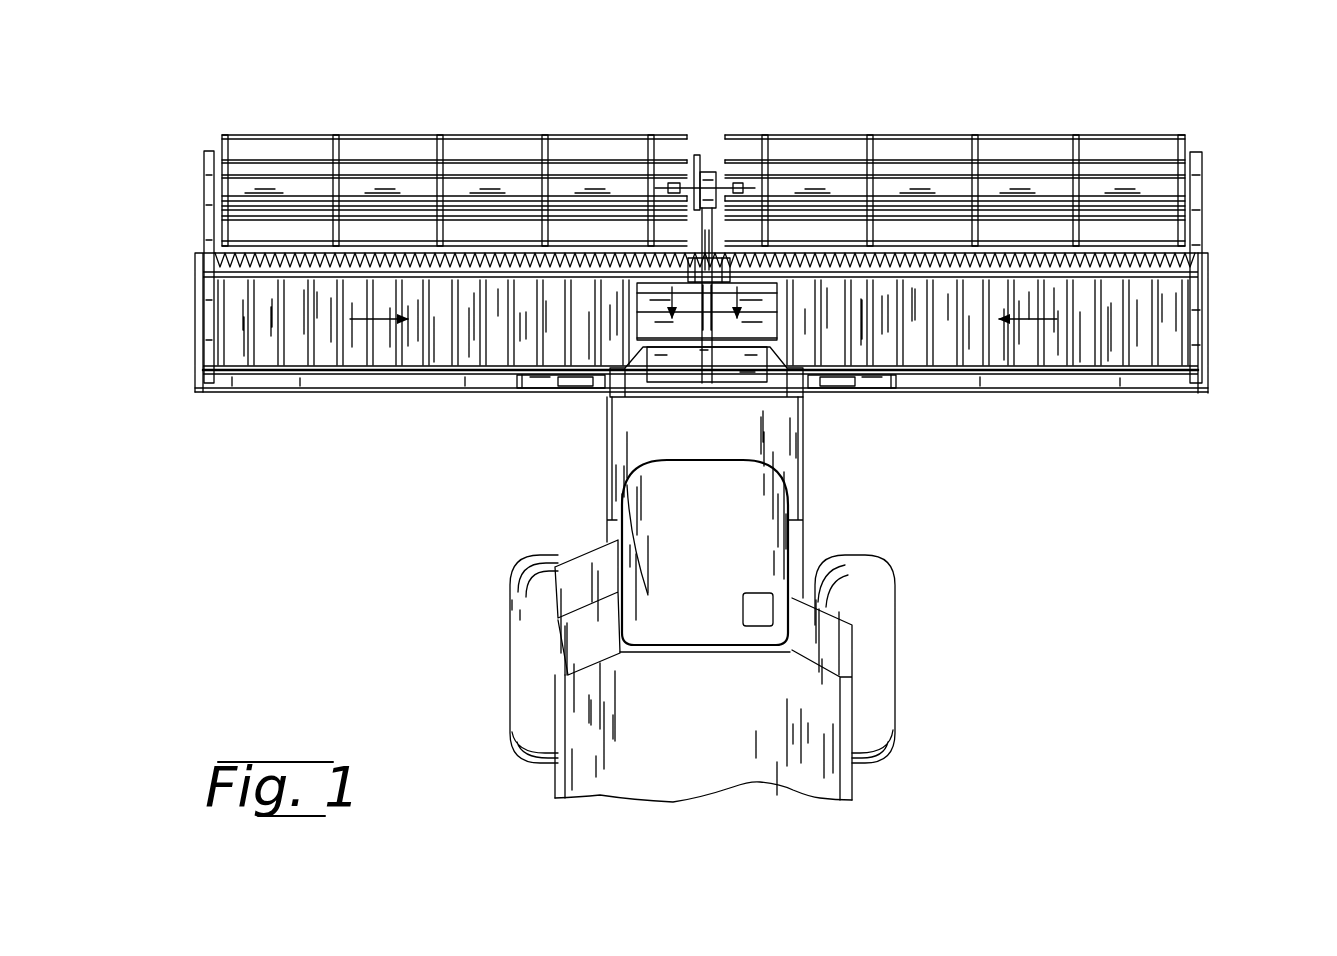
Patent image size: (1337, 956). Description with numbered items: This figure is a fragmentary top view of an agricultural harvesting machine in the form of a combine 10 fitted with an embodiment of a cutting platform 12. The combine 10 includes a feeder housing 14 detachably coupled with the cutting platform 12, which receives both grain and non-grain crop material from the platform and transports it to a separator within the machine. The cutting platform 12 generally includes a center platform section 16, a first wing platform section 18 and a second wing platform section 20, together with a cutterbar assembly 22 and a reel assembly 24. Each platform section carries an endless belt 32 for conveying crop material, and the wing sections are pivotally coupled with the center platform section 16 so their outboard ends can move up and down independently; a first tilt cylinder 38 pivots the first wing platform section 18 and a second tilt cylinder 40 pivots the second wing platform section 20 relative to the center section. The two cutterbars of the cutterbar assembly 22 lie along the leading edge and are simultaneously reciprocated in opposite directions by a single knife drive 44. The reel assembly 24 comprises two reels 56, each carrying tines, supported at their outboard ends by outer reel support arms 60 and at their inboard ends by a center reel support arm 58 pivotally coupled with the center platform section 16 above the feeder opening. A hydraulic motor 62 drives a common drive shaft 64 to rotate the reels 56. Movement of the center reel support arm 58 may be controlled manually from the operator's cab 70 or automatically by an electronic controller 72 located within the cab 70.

The combine 10 is at (1008, 588).
The cutting platform 12 is at (1095, 108).
The feeder housing 14 is at (805, 450).
The center platform section 16 is at (632, 300).
The first wing platform section 18 is at (344, 398).
The second wing platform section 20 is at (1063, 400).
The cutterbar assembly 22 is at (1152, 252).
The reel assembly 24 is at (671, 132).
The endless belt 32 is at (270, 355).
The first tilt cylinder 38 is at (577, 395).
The second tilt cylinder 40 is at (822, 395).
The knife drive 44 is at (683, 268).
The reel 56 is at (472, 134).
The center reel support arm 58 is at (702, 328).
The outer reel support arm 60 is at (204, 196).
The hydraulic motor 62 is at (718, 198).
The drive shaft 64 is at (718, 205).
The operator's cab 70 is at (690, 558).
The electronic controller 72 is at (743, 605).